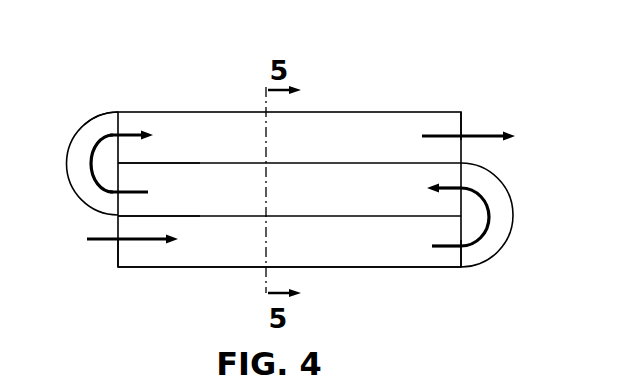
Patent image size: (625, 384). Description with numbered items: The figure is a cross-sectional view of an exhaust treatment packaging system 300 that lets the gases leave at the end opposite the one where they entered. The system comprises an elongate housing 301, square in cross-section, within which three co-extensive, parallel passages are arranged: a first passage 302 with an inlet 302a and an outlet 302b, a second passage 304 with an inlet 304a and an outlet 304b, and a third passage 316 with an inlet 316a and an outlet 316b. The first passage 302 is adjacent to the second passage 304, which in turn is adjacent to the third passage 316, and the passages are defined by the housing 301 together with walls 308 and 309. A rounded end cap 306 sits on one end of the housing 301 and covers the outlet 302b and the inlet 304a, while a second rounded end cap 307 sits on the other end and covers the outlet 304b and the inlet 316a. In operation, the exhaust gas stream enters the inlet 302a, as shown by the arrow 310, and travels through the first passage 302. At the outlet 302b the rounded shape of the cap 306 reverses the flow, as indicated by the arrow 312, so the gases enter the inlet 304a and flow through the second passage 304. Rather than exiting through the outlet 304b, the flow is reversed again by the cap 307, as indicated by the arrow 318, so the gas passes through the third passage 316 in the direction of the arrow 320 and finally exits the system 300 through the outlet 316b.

The system 300 is at (138, 46).
The elongate housing 301 is at (345, 111).
The first passage 302 is at (328, 253).
The inlet 302a is at (116, 258).
The outlet 302b is at (462, 267).
The second passage 304 is at (328, 202).
The inlet 304a is at (461, 185).
The outlet 304b is at (118, 207).
The rounded end cap 306 is at (513, 215).
The second rounded end cap 307 is at (67, 162).
The wall 308 is at (164, 215).
The wall 309 is at (164, 163).
The arrow 310 is at (152, 239).
The arrow 312 is at (463, 256).
The third passage 316 is at (328, 150).
The inlet 316a is at (117, 118).
The outlet 316b is at (462, 115).
The arrow 318 is at (130, 133).
The arrow 320 is at (486, 133).